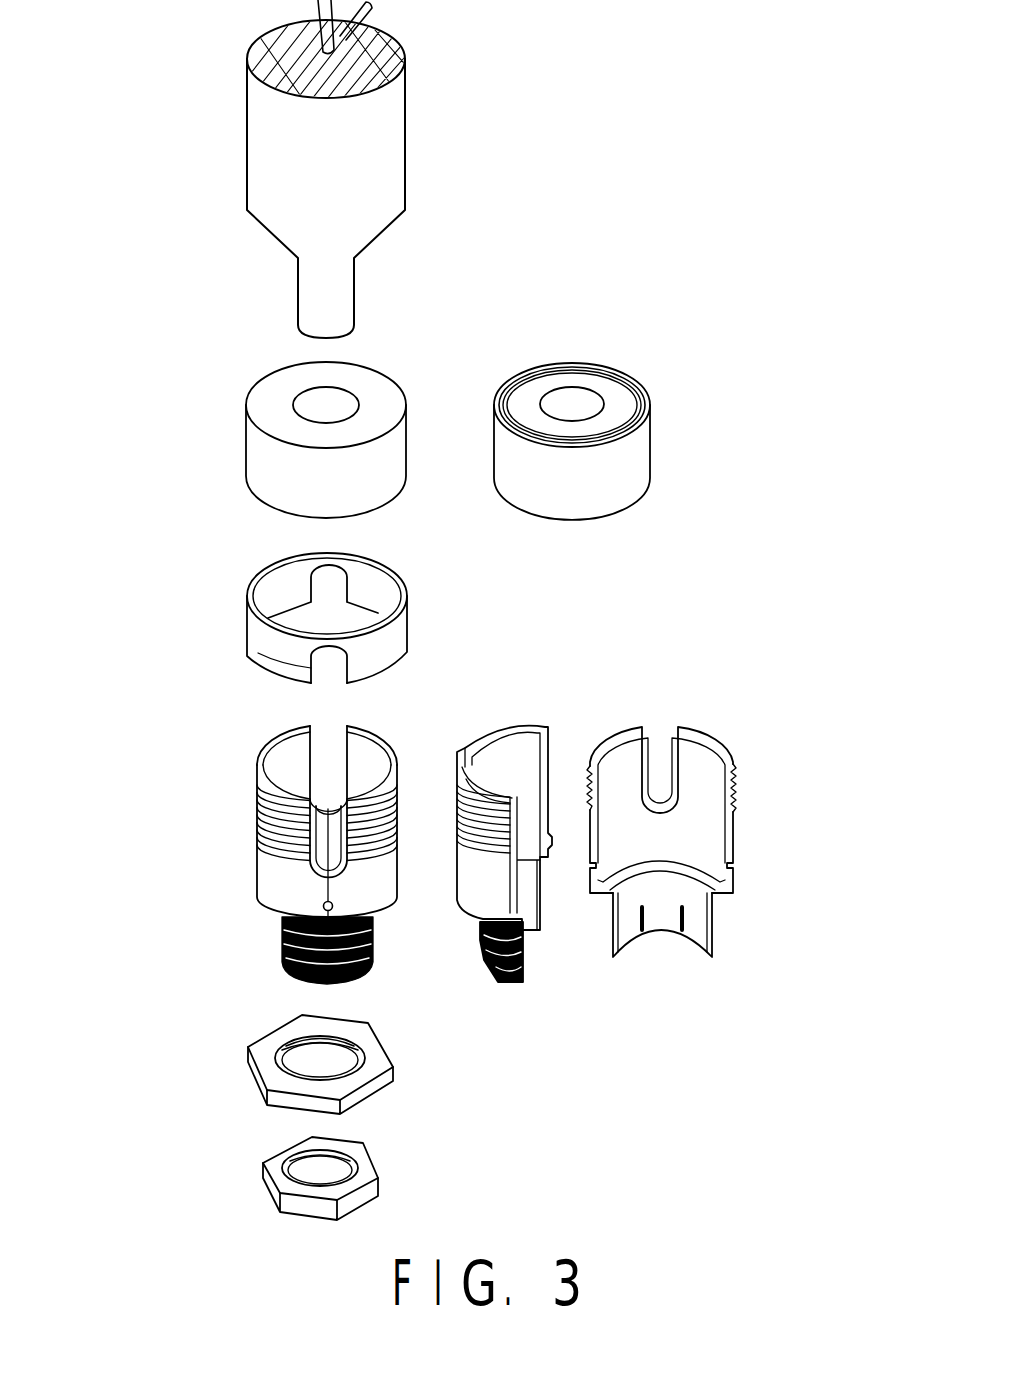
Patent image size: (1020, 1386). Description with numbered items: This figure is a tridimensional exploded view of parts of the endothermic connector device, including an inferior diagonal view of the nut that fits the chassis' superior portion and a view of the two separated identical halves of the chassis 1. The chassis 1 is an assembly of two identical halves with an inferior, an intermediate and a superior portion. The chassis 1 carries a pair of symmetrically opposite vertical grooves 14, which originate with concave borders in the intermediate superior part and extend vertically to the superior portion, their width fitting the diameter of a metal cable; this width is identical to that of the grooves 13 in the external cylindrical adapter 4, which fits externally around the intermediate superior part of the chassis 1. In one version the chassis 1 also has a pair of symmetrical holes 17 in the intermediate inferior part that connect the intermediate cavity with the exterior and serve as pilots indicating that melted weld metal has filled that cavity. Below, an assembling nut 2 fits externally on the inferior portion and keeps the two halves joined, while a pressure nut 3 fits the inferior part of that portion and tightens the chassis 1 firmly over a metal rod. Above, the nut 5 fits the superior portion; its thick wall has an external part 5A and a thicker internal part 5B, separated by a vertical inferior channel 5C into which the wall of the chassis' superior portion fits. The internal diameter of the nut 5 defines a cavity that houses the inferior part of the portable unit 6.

The chassis 1 is at (254, 865).
The assembling nut 2 is at (395, 1078).
The pressure nut 3 is at (380, 1188).
The external cylindrical adapter 4 is at (320, 632).
The nut 5 is at (505, 391).
The external part 5A is at (648, 398).
The internal part 5B is at (612, 402).
The vertical inferior channel 5C is at (630, 426).
The portable unit 6 is at (405, 157).
The grooves 13 is at (327, 664).
The vertical grooves 14 is at (320, 822).
The symmetrical holes 17 is at (322, 907).